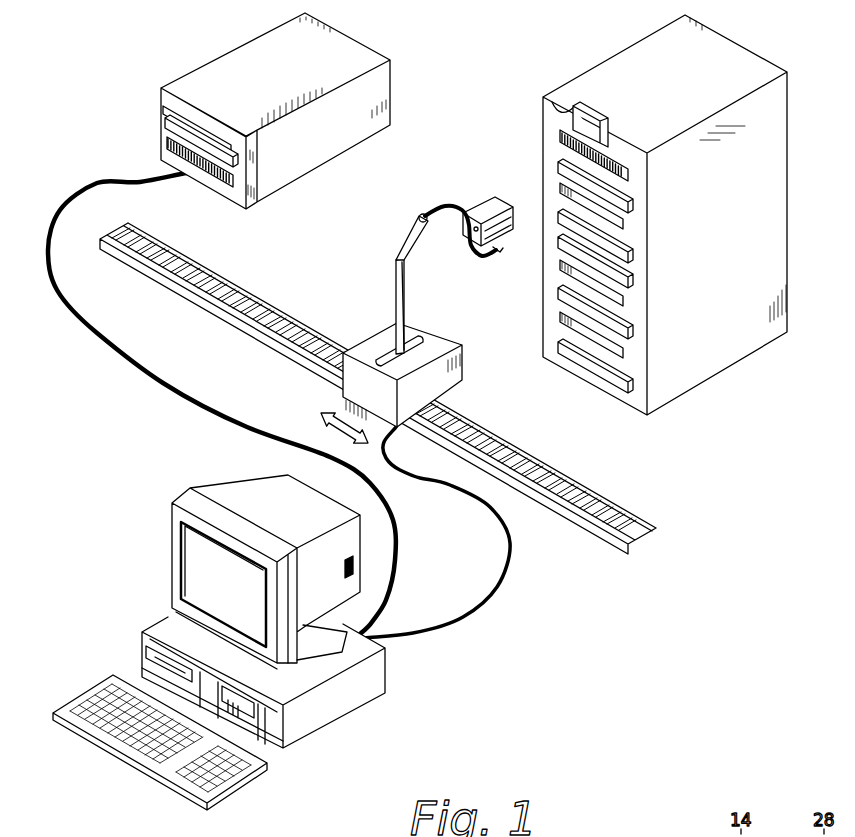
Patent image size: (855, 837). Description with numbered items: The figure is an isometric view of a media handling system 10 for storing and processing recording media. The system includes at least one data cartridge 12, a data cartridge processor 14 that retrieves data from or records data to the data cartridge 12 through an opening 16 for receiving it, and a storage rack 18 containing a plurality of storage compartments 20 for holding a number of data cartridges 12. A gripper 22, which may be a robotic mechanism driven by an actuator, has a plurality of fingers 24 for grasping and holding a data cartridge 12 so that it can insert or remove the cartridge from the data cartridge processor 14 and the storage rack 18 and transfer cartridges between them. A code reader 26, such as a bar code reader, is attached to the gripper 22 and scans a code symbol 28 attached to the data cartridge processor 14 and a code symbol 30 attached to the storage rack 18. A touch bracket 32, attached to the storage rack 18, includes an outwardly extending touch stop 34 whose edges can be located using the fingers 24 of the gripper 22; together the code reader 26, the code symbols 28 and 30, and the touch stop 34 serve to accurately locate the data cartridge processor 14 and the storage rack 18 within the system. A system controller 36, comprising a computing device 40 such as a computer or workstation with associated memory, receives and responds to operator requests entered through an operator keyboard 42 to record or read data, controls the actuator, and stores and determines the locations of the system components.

The media handling system 10 is at (540, 50).
The data cartridge 12 is at (166, 121).
The data cartridge processor 14 is at (235, 62).
The opening 16 is at (167, 110).
The storage rack 18 is at (733, 57).
The storage compartments 20 is at (628, 253).
The gripper 22 is at (378, 237).
The fingers 24 is at (492, 210).
The code reader 26 is at (492, 267).
The code symbol 28 is at (167, 145).
The code symbol 30 is at (648, 177).
The touch bracket 32 is at (593, 108).
The touch stop 34 is at (563, 117).
The system controller 36 is at (118, 514).
The computing device 40 is at (333, 713).
The operator keyboard 42 is at (87, 697).